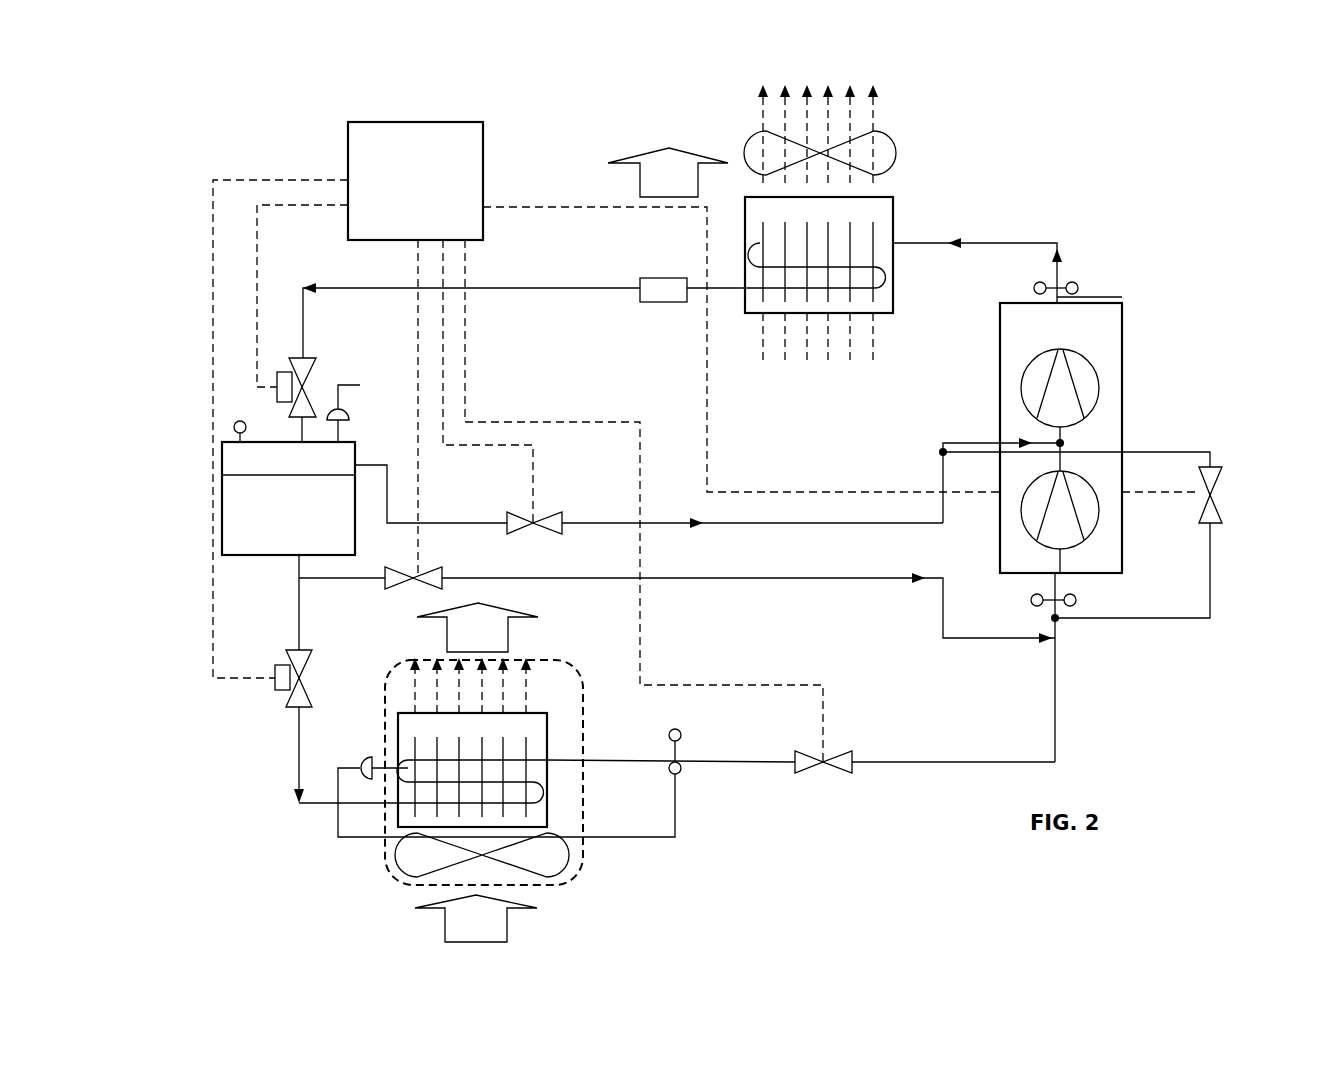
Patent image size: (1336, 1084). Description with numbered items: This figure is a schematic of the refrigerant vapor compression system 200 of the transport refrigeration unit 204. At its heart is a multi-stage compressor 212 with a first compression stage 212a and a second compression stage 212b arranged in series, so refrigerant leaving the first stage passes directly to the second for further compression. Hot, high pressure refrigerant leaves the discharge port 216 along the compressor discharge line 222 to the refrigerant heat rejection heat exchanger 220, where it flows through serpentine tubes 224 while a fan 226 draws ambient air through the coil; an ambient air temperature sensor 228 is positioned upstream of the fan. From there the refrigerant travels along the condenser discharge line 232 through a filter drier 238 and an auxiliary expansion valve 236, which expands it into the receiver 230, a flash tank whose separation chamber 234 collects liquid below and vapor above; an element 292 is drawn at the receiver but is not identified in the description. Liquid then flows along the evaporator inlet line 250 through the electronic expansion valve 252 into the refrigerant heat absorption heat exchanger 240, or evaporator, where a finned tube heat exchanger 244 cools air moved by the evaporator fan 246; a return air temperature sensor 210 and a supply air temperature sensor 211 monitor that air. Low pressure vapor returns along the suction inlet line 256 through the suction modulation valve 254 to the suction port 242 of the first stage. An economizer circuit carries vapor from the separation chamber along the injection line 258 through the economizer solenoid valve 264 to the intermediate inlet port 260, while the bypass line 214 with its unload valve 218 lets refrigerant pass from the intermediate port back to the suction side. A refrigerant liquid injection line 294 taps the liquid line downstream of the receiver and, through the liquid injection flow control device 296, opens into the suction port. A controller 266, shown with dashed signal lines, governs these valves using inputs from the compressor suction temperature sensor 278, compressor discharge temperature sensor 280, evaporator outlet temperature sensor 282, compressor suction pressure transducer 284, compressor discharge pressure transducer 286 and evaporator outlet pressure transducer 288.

The refrigerant vapor compression system 200 is at (306, 140).
The transport refrigeration unit 204 is at (1060, 136).
The return air temperature sensor 210 is at (476, 918).
The supply air temperature sensor 211 is at (474, 658).
The multi-stage compressor 212 is at (1122, 347).
The first compression stage 212a is at (1030, 520).
The second compression stage 212b is at (1026, 392).
The bypass line 214 is at (1210, 610).
The discharge port 216 is at (1112, 295).
The unload valve 218 is at (1205, 510).
The refrigerant heat rejection heat exchanger 220 is at (893, 216).
The compressor discharge line 222 is at (1003, 245).
The serpentine tubes 224 is at (880, 283).
The fan 226 is at (897, 152).
The ambient air temperature sensor 228 is at (668, 172).
The receiver 230 is at (222, 490).
The condenser discharge line 232 is at (498, 288).
The separation chamber 234 is at (298, 472).
The auxiliary expansion valve 236 is at (313, 370).
The filter drier 238 is at (640, 283).
The refrigerant heat absorption heat exchanger 240 is at (547, 732).
The suction port 242 is at (1055, 587).
The finned tube heat exchanger 244 is at (560, 792).
The evaporator fan 246 is at (570, 855).
The evaporator inlet line 250 is at (296, 774).
The electronic expansion valve 252 is at (290, 690).
The suction modulation valve 254 is at (850, 758).
The suction inlet line 256 is at (790, 762).
The injection line 258 is at (860, 523).
The intermediate inlet port 260 is at (1065, 441).
The economizer solenoid valve 264 is at (560, 515).
The controller 266 is at (706, 442).
The compressor suction temperature sensor 278 is at (1031, 600).
The compressor discharge temperature sensor 280 is at (1034, 288).
The evaporator outlet temperature sensor 282 is at (681, 735).
The compressor suction pressure transducer 284 is at (1076, 600).
The compressor discharge pressure transducer 286 is at (1078, 287).
The evaporator outlet pressure transducer 288 is at (681, 769).
The receiver level sensor 292 is at (234, 427).
The refrigerant liquid injection line 294 is at (776, 578).
The liquid injection flow control device 296 is at (442, 574).